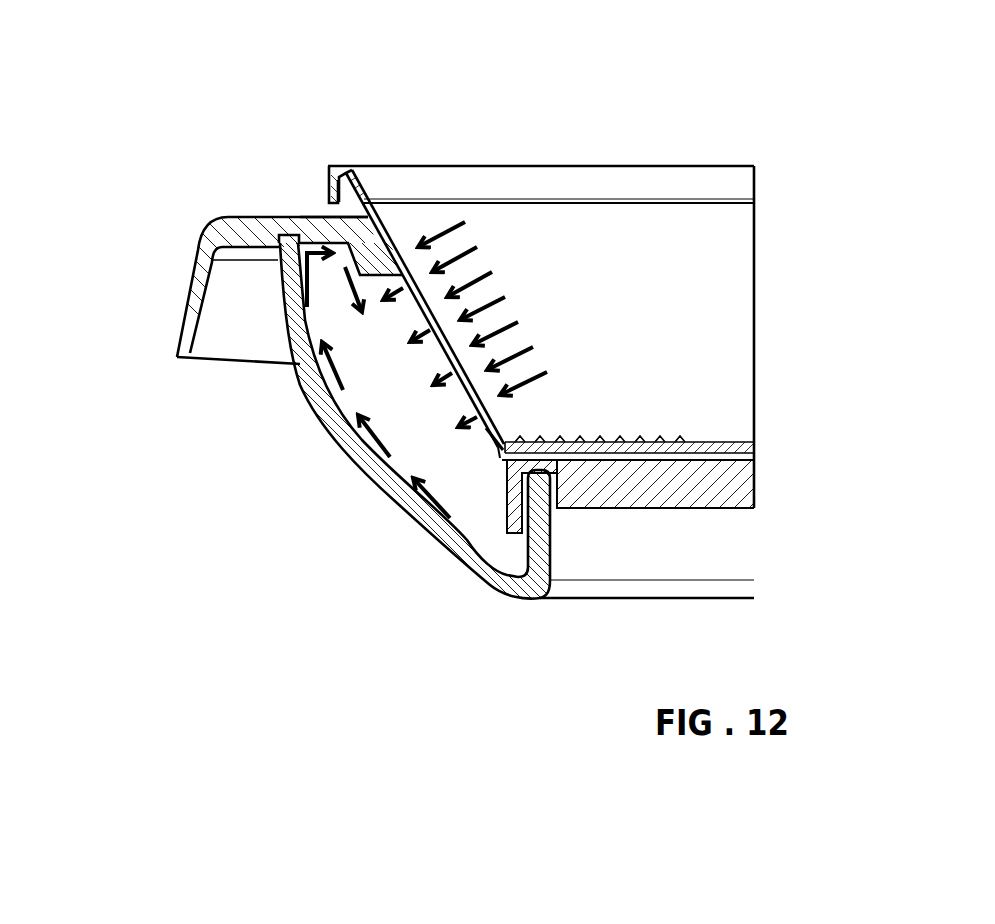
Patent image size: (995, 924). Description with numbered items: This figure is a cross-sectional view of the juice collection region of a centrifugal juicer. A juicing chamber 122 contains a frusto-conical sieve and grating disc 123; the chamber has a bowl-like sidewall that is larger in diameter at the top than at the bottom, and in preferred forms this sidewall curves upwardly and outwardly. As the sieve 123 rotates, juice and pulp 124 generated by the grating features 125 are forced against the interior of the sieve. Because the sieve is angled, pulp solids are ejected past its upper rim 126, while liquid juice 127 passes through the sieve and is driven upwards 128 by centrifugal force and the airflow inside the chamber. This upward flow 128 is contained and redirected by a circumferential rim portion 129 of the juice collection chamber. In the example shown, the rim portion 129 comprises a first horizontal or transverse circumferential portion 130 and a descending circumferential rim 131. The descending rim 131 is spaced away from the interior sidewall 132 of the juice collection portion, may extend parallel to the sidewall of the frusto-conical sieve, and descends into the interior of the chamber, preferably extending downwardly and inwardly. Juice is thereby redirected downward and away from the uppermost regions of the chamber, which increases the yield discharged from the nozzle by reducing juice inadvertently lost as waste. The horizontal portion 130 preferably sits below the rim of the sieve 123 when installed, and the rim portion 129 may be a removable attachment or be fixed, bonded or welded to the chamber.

The juicing chamber 122 is at (478, 533).
The frusto-conical sieve and grating disc 123 is at (623, 182).
The juice and pulp 124 is at (438, 228).
The grating features 125 is at (600, 440).
The upper rim 126 is at (350, 170).
The liquid juice 127 is at (473, 427).
The upward flow 128 is at (303, 381).
The circumferential rim portion 129 is at (313, 218).
The horizontal circumferential portion 130 is at (323, 217).
The descending circumferential rim 131 is at (340, 245).
The interior sidewall 132 is at (283, 293).